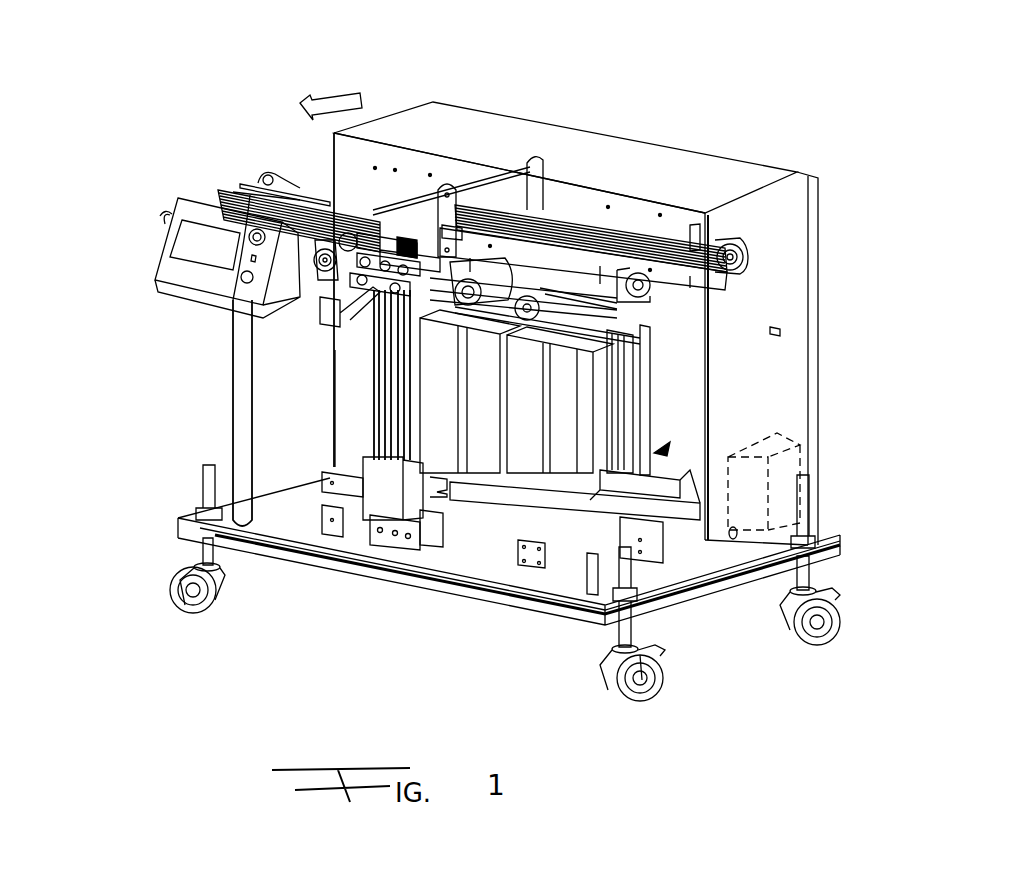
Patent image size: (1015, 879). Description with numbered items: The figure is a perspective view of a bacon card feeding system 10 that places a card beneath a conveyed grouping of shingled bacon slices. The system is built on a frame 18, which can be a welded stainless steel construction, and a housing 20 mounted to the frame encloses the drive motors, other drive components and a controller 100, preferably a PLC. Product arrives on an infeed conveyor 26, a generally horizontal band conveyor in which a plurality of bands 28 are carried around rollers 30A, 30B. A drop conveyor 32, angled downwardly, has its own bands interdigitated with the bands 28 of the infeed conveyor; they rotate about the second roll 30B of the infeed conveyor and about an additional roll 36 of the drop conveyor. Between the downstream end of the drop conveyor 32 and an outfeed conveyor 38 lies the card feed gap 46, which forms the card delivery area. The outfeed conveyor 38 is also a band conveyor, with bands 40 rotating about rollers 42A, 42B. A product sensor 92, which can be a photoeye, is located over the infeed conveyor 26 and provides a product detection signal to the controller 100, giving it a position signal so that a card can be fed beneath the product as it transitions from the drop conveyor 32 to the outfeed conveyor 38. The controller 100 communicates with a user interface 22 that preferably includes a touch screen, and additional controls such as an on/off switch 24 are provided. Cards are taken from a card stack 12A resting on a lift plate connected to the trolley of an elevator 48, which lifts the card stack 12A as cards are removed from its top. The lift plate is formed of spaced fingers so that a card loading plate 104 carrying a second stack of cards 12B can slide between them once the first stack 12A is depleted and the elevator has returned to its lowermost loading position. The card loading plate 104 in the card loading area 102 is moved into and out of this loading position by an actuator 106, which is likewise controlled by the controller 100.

The card feeding system 10 is at (890, 338).
The card stack 12A is at (438, 450).
The second stack of cards 12B is at (560, 475).
The frame 18 is at (820, 548).
The housing 20 is at (442, 118).
The user interface 22 is at (202, 257).
The on/off switch 24 is at (243, 283).
The infeed conveyor 26 is at (573, 235).
The bands 28 is at (617, 228).
The roller 30A is at (745, 258).
The second roll 30B is at (395, 210).
The drop conveyor 32 is at (415, 228).
The additional roll 36 is at (347, 210).
The outfeed conveyor 38 is at (272, 178).
The bands 40 is at (233, 192).
The roller 42A is at (322, 302).
The roller 42B is at (170, 217).
The card feed gap 46 is at (400, 228).
The elevator 48 is at (390, 472).
The product sensor 92 is at (492, 188).
The controller 100 is at (800, 453).
The card loading area 102 is at (656, 452).
The card loading plate 104 is at (560, 497).
The actuator 106 is at (633, 508).